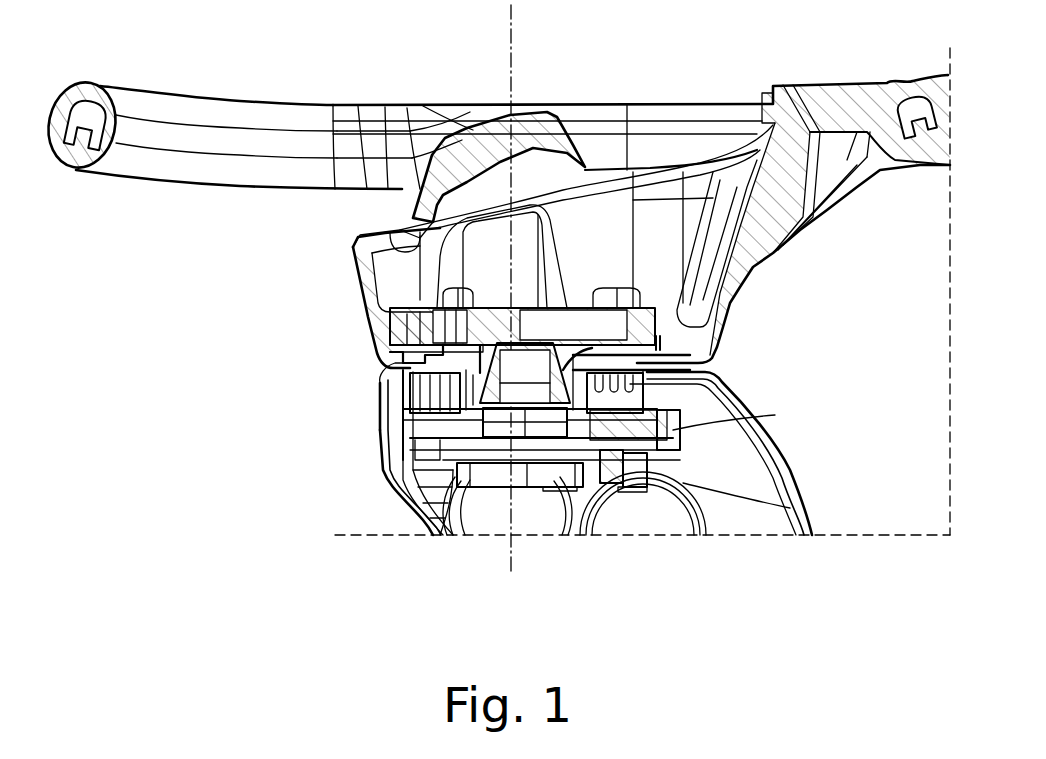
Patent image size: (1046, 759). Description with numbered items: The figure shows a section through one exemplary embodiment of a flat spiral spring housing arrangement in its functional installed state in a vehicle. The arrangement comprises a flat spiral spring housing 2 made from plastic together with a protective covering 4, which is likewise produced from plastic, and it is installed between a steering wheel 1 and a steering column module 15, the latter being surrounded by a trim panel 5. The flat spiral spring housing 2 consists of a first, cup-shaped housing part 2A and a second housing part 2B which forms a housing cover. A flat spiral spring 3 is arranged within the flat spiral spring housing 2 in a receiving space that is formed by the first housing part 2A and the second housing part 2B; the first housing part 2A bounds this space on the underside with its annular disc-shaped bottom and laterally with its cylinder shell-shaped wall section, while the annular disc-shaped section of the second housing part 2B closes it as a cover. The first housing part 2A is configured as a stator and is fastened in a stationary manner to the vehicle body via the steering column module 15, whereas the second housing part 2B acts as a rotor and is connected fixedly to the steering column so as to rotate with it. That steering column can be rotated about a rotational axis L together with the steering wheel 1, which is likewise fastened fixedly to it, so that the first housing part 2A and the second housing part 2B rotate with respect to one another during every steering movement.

The steering wheel 1 is at (345, 115).
The flat spiral spring housing 2 is at (536, 467).
The first housing part 2A is at (407, 393).
The second housing part 2B is at (433, 333).
The flat spiral spring 3 is at (613, 400).
The protective covering 4 is at (407, 355).
The trim panel 5 is at (753, 460).
The steering column module 15 is at (498, 447).
The rotational axis L is at (512, 15).